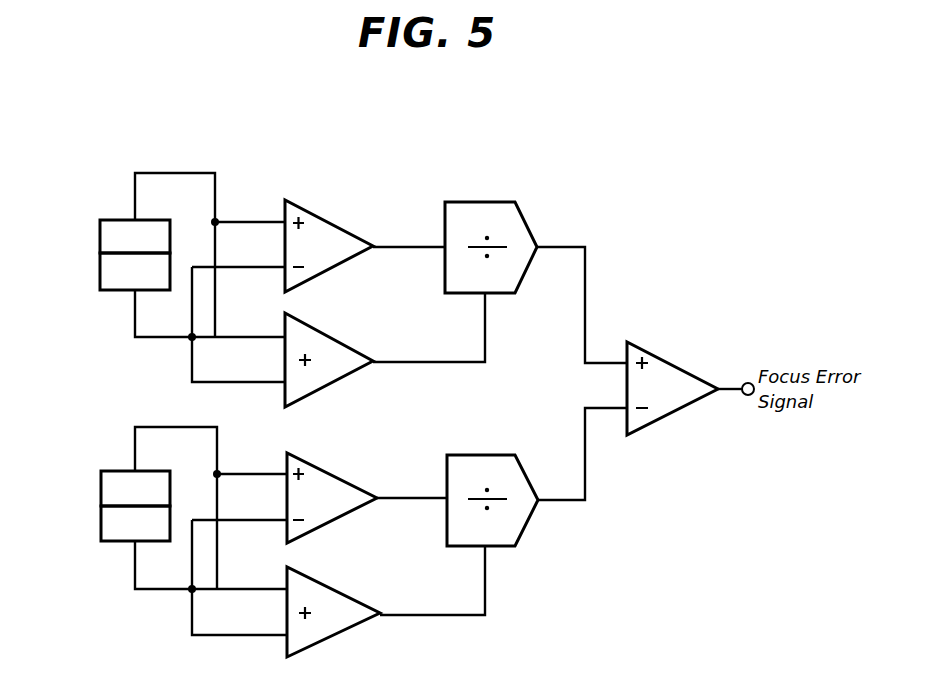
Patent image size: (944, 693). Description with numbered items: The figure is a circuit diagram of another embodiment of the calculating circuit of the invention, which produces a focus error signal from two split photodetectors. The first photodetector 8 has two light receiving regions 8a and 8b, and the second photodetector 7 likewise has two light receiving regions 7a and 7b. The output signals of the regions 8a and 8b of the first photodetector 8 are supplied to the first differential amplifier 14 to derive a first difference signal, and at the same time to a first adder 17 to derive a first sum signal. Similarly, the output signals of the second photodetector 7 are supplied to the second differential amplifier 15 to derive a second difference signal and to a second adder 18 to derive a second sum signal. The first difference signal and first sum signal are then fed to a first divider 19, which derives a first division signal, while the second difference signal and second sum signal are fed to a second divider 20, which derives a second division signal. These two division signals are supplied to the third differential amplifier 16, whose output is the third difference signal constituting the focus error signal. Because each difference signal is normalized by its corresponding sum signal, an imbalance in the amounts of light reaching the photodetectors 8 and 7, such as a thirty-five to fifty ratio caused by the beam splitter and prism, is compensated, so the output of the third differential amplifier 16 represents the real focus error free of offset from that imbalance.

The second photodetector 7 is at (103, 530).
The light receiving region of second photodetector 7a is at (106, 488).
The light receiving region of second photodetector 7b is at (106, 528).
The first photodetector 8 is at (108, 283).
The light receiving region of first photodetector 8a is at (105, 236).
The light receiving region of first photodetector 8b is at (105, 274).
The first differential amplifier 14 is at (341, 218).
The second differential amplifier 15 is at (349, 478).
The third differential amplifier 16 is at (673, 358).
The first adder 17 is at (341, 335).
The second adder 18 is at (349, 593).
The first divider 19 is at (499, 202).
The second divider 20 is at (497, 455).